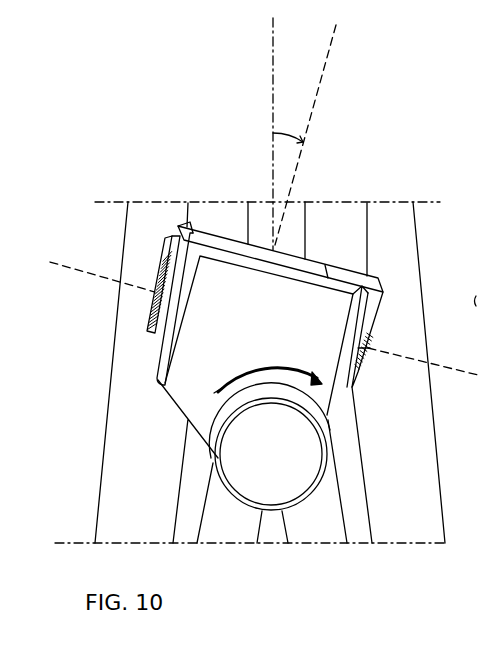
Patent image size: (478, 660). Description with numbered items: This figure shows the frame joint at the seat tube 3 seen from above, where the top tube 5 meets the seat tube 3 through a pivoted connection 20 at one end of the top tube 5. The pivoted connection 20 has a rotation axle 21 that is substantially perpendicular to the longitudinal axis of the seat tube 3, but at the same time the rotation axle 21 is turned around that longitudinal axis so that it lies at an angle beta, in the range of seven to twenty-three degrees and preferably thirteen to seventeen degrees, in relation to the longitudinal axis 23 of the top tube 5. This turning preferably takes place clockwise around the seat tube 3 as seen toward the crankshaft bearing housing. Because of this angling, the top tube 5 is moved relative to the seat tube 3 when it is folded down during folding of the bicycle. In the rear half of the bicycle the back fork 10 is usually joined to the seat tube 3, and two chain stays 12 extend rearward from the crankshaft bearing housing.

The seat tube 3 is at (315, 500).
The top tube 5 is at (368, 223).
The back fork 10 is at (203, 503).
The chain stays 12 is at (103, 458).
The pivoted connection 20 is at (157, 352).
The rotation axle 21 is at (78, 266).
The longitudinal axis of the top tube 23 is at (272, 58).